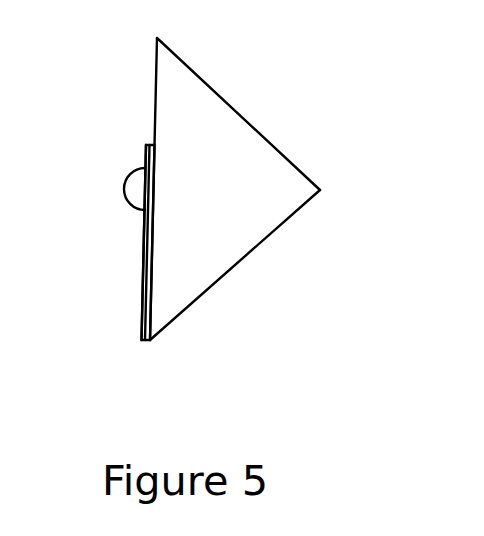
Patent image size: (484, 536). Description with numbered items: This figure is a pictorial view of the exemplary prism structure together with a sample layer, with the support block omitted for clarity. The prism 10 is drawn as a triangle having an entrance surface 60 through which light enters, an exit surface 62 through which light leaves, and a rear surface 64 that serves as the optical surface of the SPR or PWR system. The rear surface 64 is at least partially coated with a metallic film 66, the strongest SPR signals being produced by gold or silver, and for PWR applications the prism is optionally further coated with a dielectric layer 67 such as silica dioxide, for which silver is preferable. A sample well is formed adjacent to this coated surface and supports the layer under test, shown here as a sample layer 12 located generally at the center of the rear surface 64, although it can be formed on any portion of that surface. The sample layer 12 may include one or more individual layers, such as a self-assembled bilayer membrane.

The prism 10 is at (205, 189).
The sample layer 12 is at (132, 192).
The entrance surface 60 is at (249, 124).
The exit surface 62 is at (228, 272).
The rear surface 64 is at (153, 90).
The metallic film 66 is at (148, 343).
The dielectric layer 67 is at (145, 262).